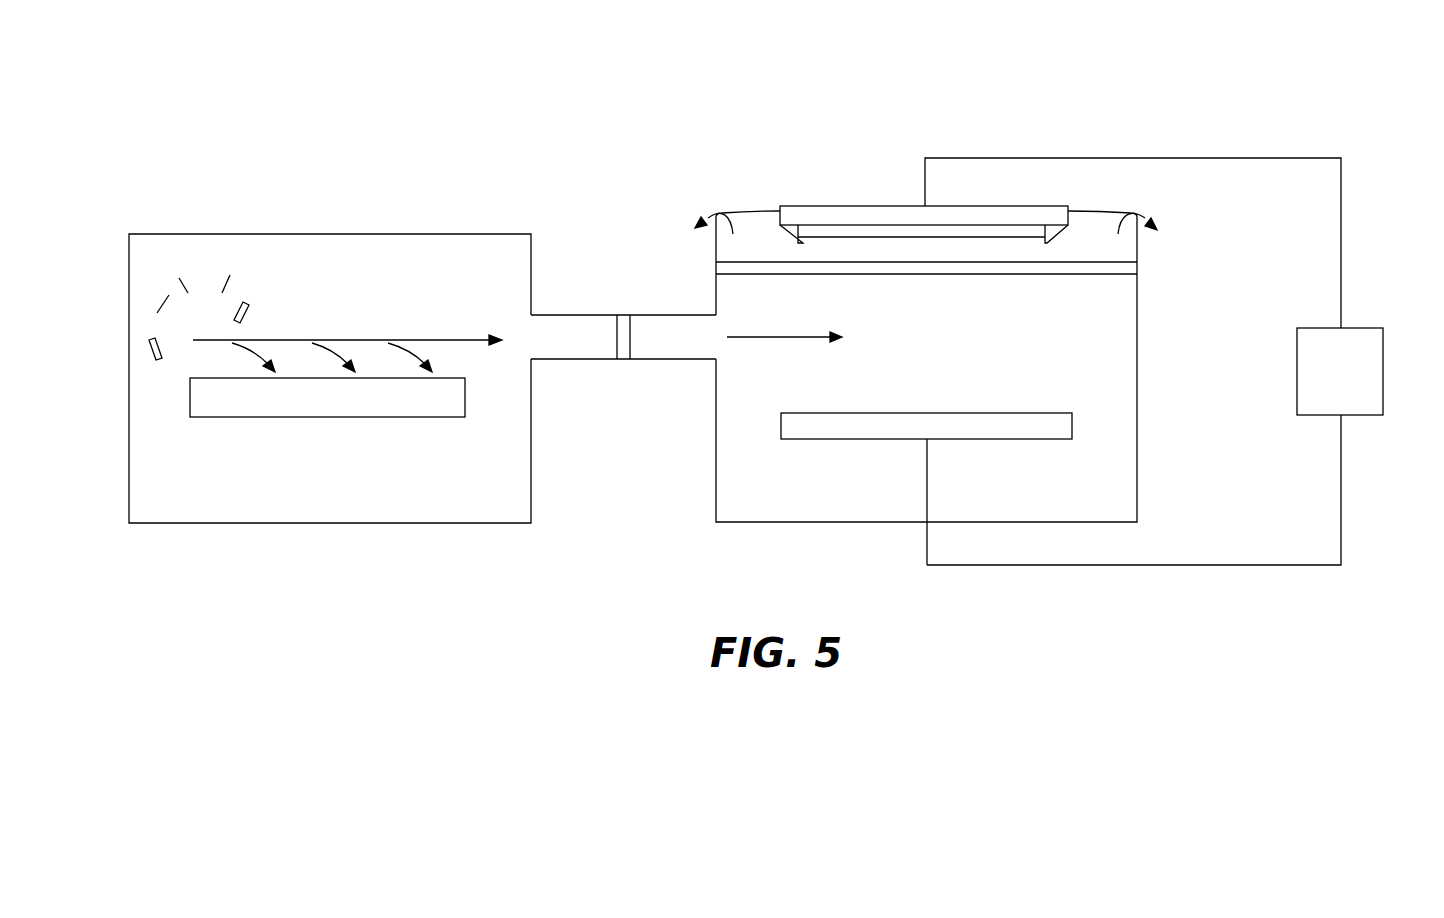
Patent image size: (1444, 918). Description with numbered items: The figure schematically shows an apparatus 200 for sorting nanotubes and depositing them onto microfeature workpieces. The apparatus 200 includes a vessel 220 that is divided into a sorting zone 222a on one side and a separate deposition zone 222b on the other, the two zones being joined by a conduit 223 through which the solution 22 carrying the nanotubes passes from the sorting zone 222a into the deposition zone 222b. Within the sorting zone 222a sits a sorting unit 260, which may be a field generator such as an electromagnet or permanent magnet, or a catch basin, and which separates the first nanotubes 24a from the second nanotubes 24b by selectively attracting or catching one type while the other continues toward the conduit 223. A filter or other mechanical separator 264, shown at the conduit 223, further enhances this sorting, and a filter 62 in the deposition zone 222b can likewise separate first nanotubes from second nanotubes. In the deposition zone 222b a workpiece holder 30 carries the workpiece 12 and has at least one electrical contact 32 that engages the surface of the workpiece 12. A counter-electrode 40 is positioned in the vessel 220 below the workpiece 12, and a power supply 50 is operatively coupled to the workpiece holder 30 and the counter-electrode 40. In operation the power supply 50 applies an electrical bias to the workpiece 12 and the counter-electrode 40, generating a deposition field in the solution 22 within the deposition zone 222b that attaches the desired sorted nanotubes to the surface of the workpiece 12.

The apparatus 200 is at (920, 94).
The sorting zone 222a is at (313, 523).
The first nanotubes 24a is at (226, 283).
The second nanotubes 24b is at (247, 320).
The sorting unit 260 is at (270, 412).
The conduit 223 is at (560, 315).
The mechanical separator 264 is at (613, 345).
The vessel 220 is at (694, 457).
The deposition zone 222b is at (832, 520).
The solution 22 is at (1103, 212).
The electrical contact 32 is at (797, 242).
The workpiece holder 30 is at (833, 208).
The workpiece 12 is at (920, 238).
The filter 62 is at (1078, 270).
The counter-electrode 40 is at (1042, 435).
The power supply 50 is at (1383, 368).